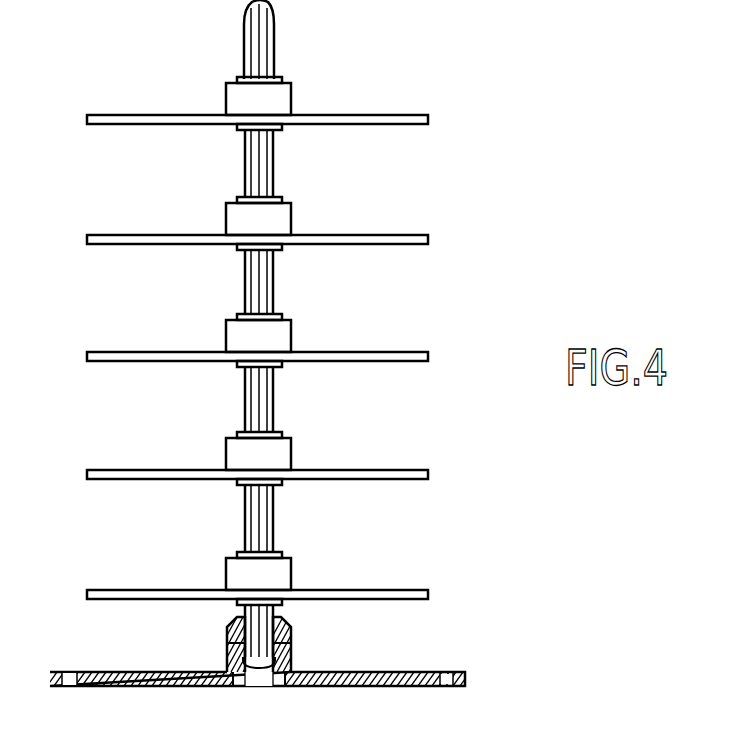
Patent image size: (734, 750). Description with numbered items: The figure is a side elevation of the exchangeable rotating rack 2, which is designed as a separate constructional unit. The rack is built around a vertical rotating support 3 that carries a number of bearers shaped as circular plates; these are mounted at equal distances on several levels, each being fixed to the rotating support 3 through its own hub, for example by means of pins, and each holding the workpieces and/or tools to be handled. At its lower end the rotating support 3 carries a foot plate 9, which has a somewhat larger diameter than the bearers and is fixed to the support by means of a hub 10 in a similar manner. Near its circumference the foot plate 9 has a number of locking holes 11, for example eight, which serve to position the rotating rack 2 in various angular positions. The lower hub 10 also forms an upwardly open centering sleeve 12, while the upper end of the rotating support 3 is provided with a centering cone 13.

The rotating rack 2 is at (367, 210).
The rotating support 3 is at (257, 168).
The foot plate 9 is at (143, 672).
The hub 10 is at (290, 640).
The locking hole 11 is at (444, 673).
The centering sleeve 12 is at (250, 687).
The centering cone 13 is at (270, 12).